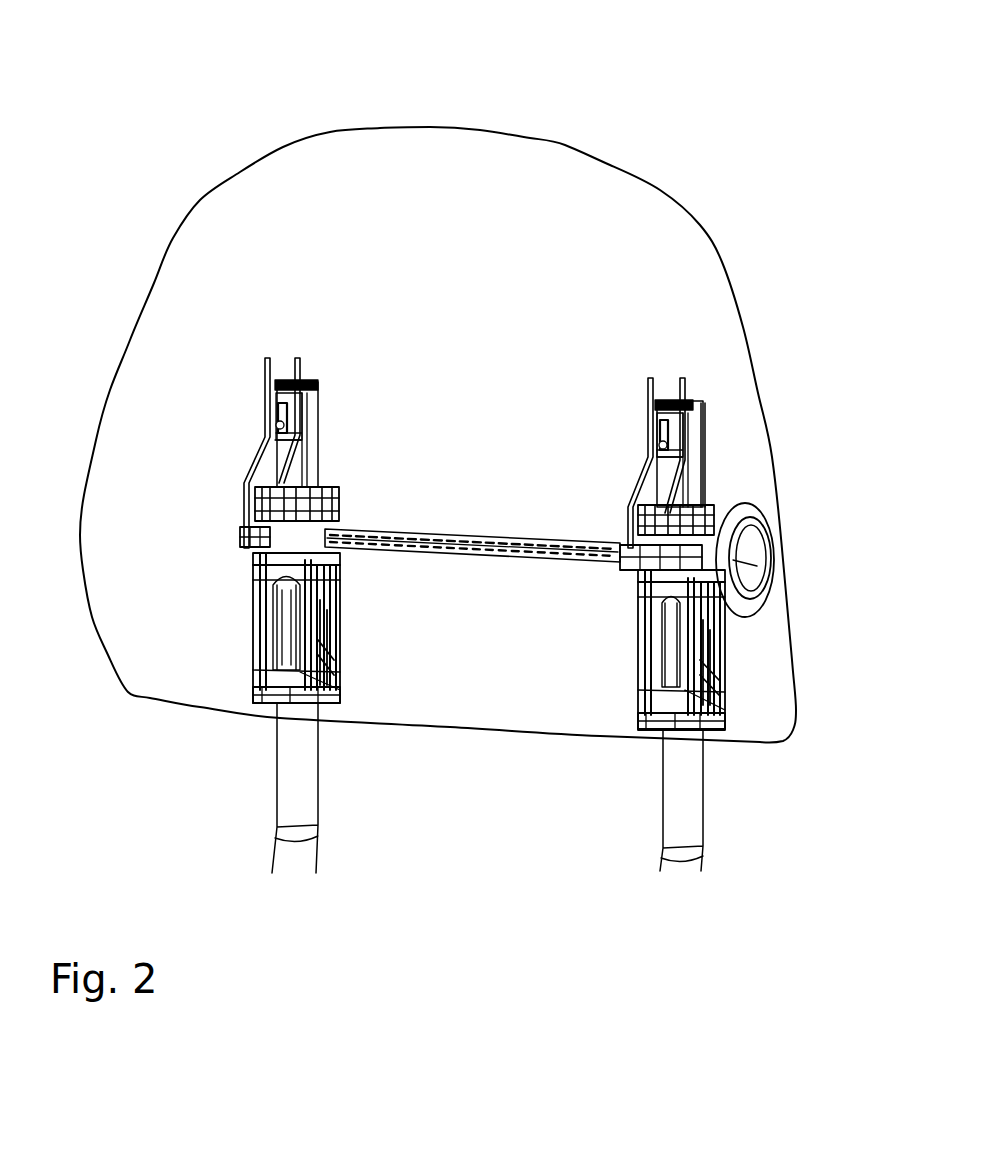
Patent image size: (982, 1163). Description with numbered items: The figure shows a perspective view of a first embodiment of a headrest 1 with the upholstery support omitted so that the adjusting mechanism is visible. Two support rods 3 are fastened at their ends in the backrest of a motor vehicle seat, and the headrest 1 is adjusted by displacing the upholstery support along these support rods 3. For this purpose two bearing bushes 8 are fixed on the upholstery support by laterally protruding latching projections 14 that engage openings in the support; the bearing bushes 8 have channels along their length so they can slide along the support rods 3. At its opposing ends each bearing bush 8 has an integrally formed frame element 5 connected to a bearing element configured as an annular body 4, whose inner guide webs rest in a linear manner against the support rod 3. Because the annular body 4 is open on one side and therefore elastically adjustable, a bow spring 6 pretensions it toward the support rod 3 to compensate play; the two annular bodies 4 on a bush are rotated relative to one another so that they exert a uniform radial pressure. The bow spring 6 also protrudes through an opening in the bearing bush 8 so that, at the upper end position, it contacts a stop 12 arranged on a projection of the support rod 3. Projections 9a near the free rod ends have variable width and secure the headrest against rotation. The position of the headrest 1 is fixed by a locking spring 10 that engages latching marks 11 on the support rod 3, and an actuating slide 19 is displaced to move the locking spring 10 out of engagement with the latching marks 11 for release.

The headrest 1 is at (400, 163).
The support rod 3 is at (287, 810).
The annular body 4 is at (345, 500).
The frame element 5 is at (260, 490).
The bow spring 6 is at (255, 590).
The bearing bush 8 is at (262, 636).
The projection 9a is at (273, 398).
The locking spring 10 is at (263, 447).
The latching marks 11 is at (253, 635).
The stop 12 is at (688, 507).
The latching projections 14 is at (340, 647).
The actuating slide 19 is at (518, 552).